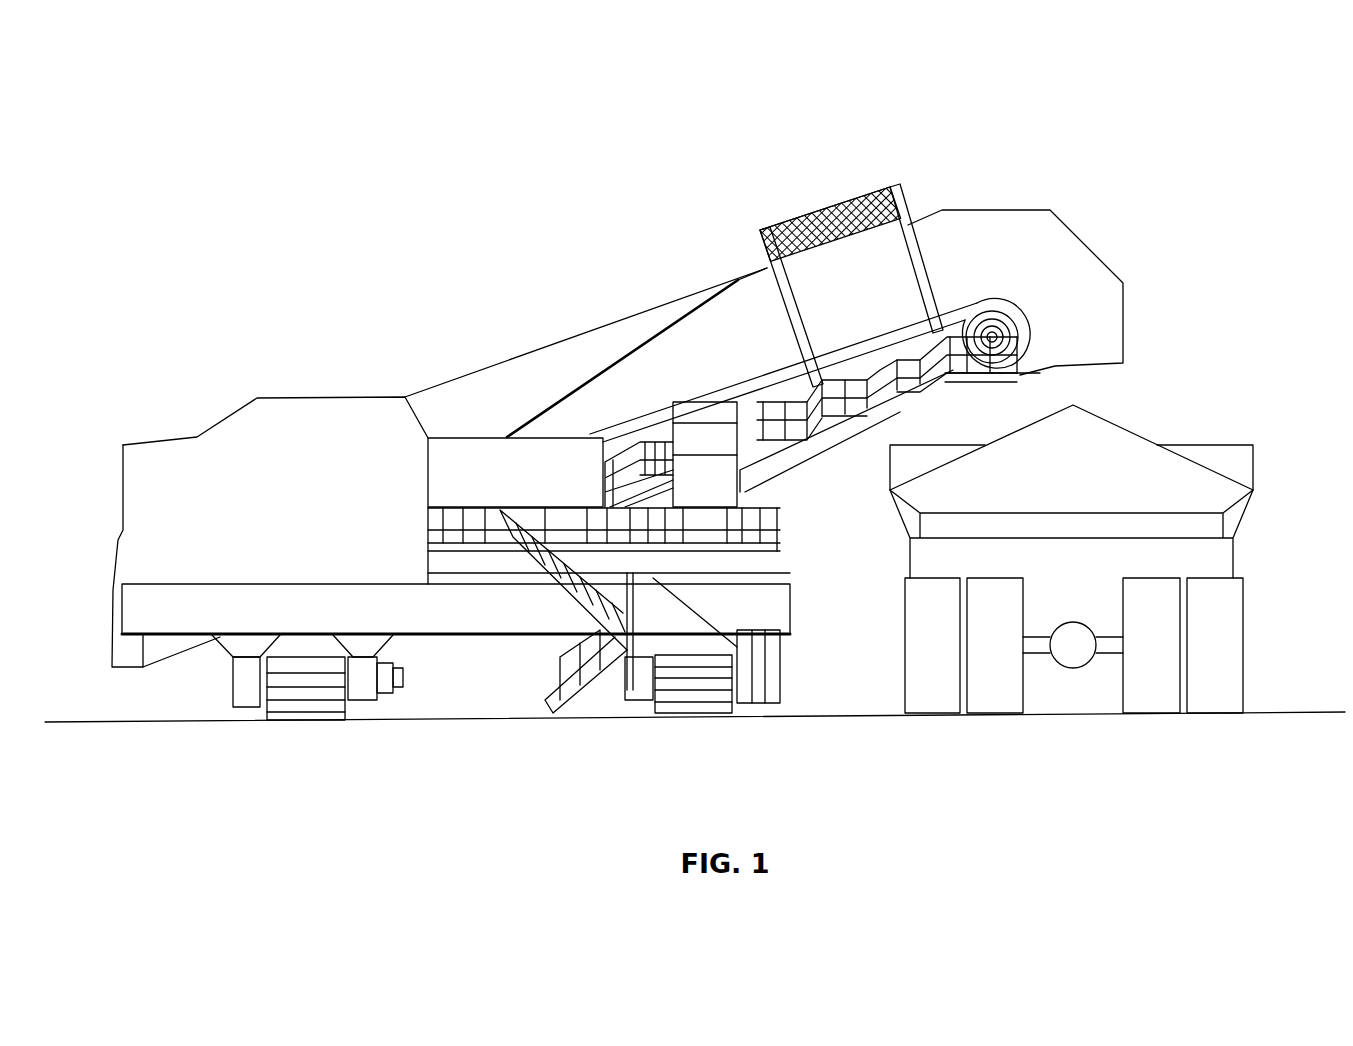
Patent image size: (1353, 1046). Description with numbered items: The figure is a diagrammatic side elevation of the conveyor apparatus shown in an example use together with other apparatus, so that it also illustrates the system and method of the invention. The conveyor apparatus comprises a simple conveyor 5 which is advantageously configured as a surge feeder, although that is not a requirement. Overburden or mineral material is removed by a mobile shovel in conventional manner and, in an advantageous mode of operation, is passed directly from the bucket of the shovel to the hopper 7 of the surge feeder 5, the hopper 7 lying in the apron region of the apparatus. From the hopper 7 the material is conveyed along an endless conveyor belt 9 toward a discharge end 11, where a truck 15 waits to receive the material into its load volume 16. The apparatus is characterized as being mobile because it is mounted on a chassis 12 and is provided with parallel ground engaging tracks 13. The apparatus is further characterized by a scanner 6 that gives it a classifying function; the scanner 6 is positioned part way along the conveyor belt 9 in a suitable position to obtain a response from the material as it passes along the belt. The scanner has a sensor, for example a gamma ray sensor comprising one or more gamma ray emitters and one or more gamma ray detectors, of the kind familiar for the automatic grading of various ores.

The conveyor 5 is at (587, 270).
The scanner 6 is at (837, 207).
The hopper 7 is at (303, 433).
The endless conveyor belt 9 is at (743, 340).
The discharge end 11 is at (1108, 207).
The chassis 12 is at (145, 617).
The ground engaging tracks 13 is at (310, 722).
The truck 15 is at (1220, 410).
The load volume 16 is at (1120, 440).